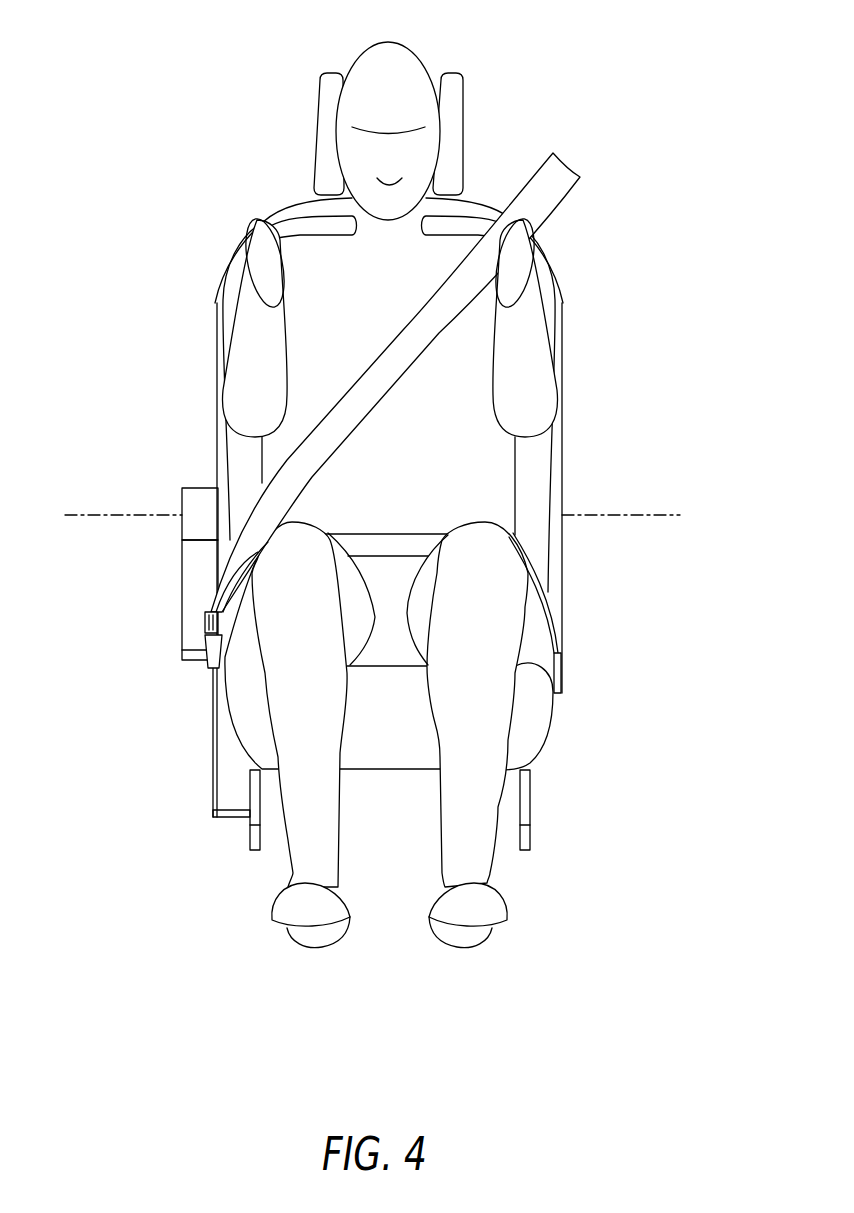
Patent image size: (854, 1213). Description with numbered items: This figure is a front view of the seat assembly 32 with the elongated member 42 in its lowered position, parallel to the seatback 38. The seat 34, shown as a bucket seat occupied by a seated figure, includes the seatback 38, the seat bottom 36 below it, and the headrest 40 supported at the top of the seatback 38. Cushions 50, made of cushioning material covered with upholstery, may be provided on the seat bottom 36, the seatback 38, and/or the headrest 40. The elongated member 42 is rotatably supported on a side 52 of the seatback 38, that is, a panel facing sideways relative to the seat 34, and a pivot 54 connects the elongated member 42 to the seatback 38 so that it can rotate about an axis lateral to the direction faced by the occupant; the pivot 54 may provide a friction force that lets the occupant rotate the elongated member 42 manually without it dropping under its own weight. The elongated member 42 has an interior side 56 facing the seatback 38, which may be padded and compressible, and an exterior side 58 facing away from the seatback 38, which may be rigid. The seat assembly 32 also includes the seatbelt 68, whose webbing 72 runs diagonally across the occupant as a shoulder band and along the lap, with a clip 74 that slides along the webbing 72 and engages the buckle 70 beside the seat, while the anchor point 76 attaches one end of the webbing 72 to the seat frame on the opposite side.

The seat assembly 32 is at (613, 92).
The seat 34 is at (370, 481).
The seat bottom 36 is at (550, 727).
The seatback 38 is at (282, 207).
The headrest 40 is at (458, 100).
The elongated member 42 is at (182, 588).
The cushions 50 is at (451, 617).
The side 52 is at (215, 317).
The pivot 54 is at (182, 503).
The interior side 56 is at (250, 553).
The exterior side 58 is at (157, 642).
The seatbelt 68 is at (395, 382).
The buckle 70 is at (203, 658).
The webbing 72 is at (358, 428).
The clip 74 is at (205, 617).
The anchor point 76 is at (561, 682).